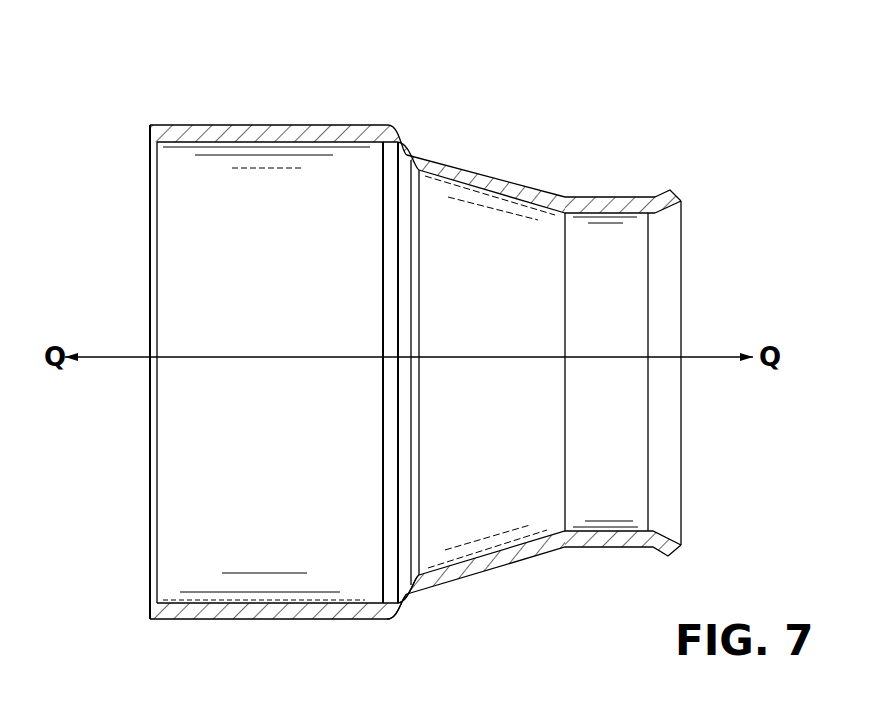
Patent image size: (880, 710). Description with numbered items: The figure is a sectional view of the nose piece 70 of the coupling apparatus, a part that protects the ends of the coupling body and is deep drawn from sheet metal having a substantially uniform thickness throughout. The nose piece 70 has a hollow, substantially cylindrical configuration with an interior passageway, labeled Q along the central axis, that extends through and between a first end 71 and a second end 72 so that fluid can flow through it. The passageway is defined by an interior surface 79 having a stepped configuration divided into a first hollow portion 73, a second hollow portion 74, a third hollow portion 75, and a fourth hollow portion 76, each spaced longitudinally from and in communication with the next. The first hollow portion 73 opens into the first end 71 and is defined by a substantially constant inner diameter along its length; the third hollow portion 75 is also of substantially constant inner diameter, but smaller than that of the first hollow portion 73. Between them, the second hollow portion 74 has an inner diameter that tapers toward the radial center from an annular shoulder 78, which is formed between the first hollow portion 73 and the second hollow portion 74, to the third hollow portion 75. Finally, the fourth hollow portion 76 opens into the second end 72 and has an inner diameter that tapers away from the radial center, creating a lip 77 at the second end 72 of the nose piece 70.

The nose piece 70 is at (694, 104).
The first end 71 is at (148, 353).
The second end 72 is at (681, 350).
The first hollow portion 73 is at (255, 125).
The second hollow portion 74 is at (498, 180).
The third hollow portion 75 is at (615, 205).
The fourth hollow portion 76 is at (662, 213).
The lip 77 is at (675, 200).
The annular shoulder 78 is at (407, 605).
The interior surface 79 is at (350, 168).